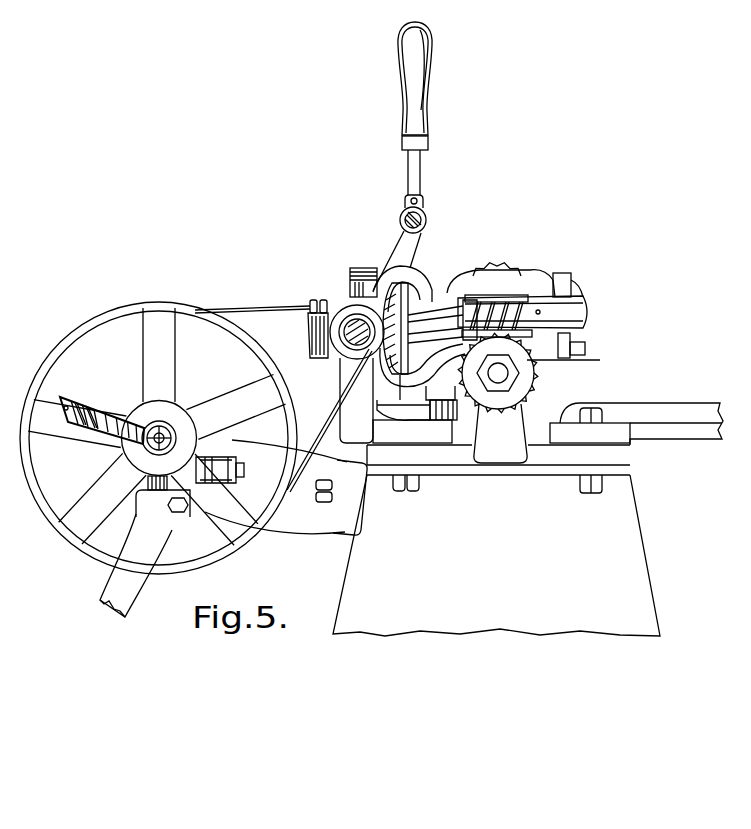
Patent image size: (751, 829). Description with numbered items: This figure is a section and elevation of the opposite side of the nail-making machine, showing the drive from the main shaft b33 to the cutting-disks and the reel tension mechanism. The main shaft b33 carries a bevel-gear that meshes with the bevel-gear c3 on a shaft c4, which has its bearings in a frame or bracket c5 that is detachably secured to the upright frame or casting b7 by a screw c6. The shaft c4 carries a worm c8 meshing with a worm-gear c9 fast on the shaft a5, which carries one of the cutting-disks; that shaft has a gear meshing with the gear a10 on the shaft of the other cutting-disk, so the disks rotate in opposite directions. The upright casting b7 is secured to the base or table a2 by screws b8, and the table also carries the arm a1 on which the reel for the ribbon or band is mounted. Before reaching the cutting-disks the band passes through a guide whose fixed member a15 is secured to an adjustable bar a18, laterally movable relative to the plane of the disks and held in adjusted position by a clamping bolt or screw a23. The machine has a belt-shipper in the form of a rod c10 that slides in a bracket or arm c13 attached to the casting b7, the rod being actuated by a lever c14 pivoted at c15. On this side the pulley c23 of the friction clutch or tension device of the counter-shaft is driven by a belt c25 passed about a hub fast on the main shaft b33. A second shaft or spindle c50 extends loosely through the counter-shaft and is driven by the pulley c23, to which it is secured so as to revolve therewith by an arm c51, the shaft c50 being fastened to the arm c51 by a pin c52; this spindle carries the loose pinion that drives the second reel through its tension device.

The lever c14 is at (420, 180).
The belt-shipper rod c10 is at (426, 220).
The bracket or arm c13 is at (400, 247).
The shaft c4 is at (409, 313).
The main shaft b33 is at (355, 335).
The screw c6 is at (318, 300).
The belt c25 is at (255, 306).
The pulley c23 is at (168, 360).
The second shaft or spindle c50 is at (177, 433).
The pin c52 is at (172, 422).
The arm c51 is at (72, 425).
The upright frame or casting b7 is at (341, 395).
The bevel-gear c3 is at (372, 380).
The screws b8 is at (408, 403).
The pivot c15 is at (431, 404).
The base or table a2 is at (562, 466).
The arm a1 is at (683, 441).
The worm-gear c9 is at (498, 398).
The shaft a5 is at (503, 377).
The gear a10 is at (488, 264).
The frame or bracket c5 is at (535, 275).
The worm c8 is at (510, 302).
The fixed member a15 is at (583, 328).
The clamping bolt or screw a23 is at (586, 341).
The bar a18 is at (578, 366).